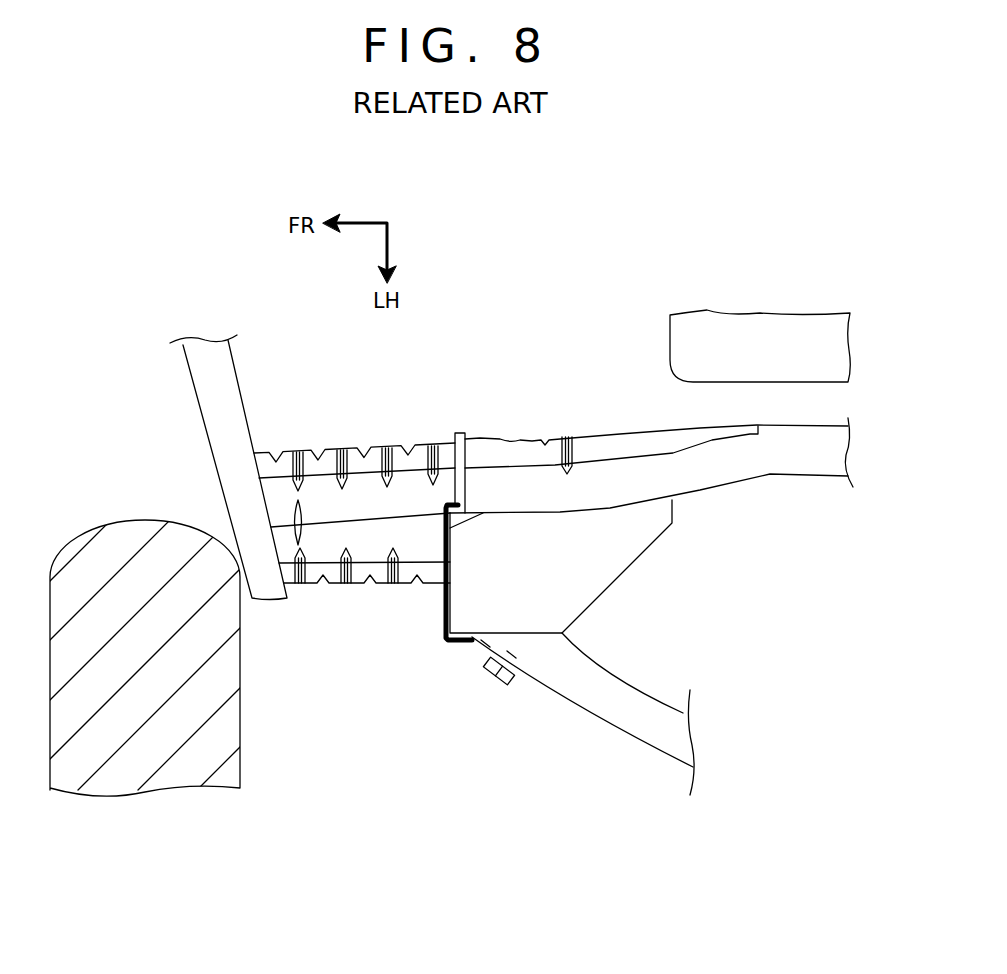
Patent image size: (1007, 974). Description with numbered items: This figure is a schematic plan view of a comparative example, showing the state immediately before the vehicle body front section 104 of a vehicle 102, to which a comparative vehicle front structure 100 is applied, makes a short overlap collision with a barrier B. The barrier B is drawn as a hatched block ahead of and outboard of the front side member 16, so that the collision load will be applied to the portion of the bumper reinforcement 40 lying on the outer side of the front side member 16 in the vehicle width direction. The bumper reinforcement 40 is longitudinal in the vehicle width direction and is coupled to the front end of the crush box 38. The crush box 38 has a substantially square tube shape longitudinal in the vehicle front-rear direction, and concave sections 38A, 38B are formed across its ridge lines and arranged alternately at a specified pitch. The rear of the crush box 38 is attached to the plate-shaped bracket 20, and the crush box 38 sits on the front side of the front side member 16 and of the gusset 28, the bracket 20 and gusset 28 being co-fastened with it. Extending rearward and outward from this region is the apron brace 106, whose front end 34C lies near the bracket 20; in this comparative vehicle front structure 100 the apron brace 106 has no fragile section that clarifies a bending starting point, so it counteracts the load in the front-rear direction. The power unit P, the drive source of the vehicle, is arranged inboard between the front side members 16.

The front side member 16 is at (803, 474).
The bracket 20 is at (458, 432).
The gusset 28 is at (615, 562).
The front end 34C is at (483, 641).
The crush box 38 is at (335, 586).
The concave section 38A is at (298, 453).
The concave section 38B is at (364, 453).
The bumper reinforcement 40 is at (207, 418).
The vehicle front structure 100 is at (453, 775).
The vehicle 102 is at (118, 358).
The vehicle body front section 104 is at (366, 636).
The apron brace 106 is at (598, 700).
The barrier B is at (103, 540).
The power unit P is at (752, 328).